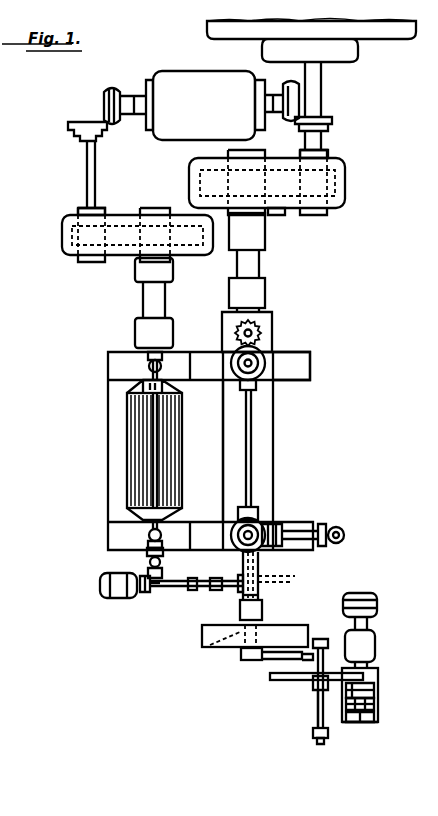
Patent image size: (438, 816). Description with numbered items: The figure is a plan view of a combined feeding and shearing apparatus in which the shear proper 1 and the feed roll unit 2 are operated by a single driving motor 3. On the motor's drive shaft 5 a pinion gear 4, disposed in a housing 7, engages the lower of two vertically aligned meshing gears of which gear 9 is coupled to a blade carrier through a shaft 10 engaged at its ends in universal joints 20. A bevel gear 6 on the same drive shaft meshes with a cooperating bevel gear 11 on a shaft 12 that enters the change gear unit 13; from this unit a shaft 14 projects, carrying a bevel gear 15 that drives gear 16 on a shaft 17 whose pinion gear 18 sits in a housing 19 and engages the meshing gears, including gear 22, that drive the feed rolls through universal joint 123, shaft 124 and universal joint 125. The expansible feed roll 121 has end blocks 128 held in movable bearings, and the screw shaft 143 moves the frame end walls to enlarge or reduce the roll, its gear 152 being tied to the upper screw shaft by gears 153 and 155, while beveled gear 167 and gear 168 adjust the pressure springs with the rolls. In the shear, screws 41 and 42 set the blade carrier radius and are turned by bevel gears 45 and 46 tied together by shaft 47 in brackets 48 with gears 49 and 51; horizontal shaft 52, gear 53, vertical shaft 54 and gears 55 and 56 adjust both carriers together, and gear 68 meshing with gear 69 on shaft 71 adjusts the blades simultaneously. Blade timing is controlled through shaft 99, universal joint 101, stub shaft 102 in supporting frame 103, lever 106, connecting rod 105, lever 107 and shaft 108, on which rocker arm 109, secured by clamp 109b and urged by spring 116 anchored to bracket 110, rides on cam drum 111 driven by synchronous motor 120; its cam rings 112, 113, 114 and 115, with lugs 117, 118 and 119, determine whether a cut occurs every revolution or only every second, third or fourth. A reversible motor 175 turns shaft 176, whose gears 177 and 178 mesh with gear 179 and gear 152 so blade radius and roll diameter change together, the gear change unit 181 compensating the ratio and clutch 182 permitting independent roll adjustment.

The shear proper 1 is at (217, 452).
The feed roll unit 2 is at (189, 423).
The driving motor 3 is at (388, 28).
The pinion gear 4 is at (330, 185).
The drive shaft 5 is at (322, 80).
The bevel gear 6 is at (330, 119).
The housing 7 is at (345, 200).
The meshing gear 9 is at (278, 212).
The shaft 10 is at (252, 262).
The bevel gear 11 is at (283, 88).
The shaft 12 is at (275, 114).
The change gear unit 13 is at (178, 141).
The shaft 14 is at (137, 114).
The bevel gear 15 is at (109, 88).
The gear 16 is at (76, 125).
The shaft 17 is at (89, 158).
The pinion gear 18 is at (72, 233).
The housing 19 is at (82, 218).
The universal joint 20 is at (266, 232).
The meshing gear 22 is at (116, 224).
The screw 41 is at (312, 368).
The screw 42 is at (265, 546).
The bevel gear 45 is at (312, 358).
The bevel gear 46 is at (238, 525).
The shaft 47 is at (252, 475).
The bracket 48 is at (260, 384).
The gear 49 is at (258, 380).
The gear 51 is at (258, 512).
The horizontal shaft 52 is at (300, 531).
The gear 53 is at (278, 524).
The vertical shaft 54 is at (344, 539).
The gear 55 is at (328, 526).
The gear 56 is at (343, 532).
The gear 68 is at (272, 340).
The gear 69 is at (260, 326).
The shaft 71 is at (252, 333).
The shaft 99 is at (258, 597).
The universal joint 101 is at (262, 610).
The stub shaft 102 is at (215, 650).
The supporting frame 103 is at (205, 638).
The connecting rod 105 is at (262, 658).
The lever 106 is at (240, 655).
The lever 107 is at (300, 646).
The shaft 108 is at (315, 665).
The rocker arm 109 is at (322, 645).
The clamp 109b is at (272, 679).
The bracket 110 is at (328, 738).
The cam drum 111 is at (375, 720).
The cam ring 112 is at (378, 672).
The cam ring 113 is at (376, 690).
The cam band 114 is at (378, 702).
The cam band 115 is at (378, 713).
The spring 116 is at (322, 745).
The lug 117 is at (345, 692).
The lug 118 is at (345, 705).
The lug 119 is at (312, 735).
The synchronous motor 120 is at (365, 593).
The expansible feed roll 121 is at (127, 410).
The universal joint 123 is at (135, 270).
The shaft 124 is at (143, 300).
The universal joint 125 is at (135, 333).
The end block 128 is at (143, 386).
The screw shaft 143 is at (165, 580).
The gear 152 is at (168, 584).
The gear 153 is at (150, 560).
The gear 155 is at (152, 572).
The beveled gear 167 is at (149, 368).
The gear 168 is at (148, 356).
The reversible motor 175 is at (100, 585).
The shaft 176 is at (165, 590).
The gear 177 is at (143, 592).
The gear 178 is at (258, 578).
The gear 179 is at (258, 583).
The gear change unit 181 is at (214, 592).
The clutch 182 is at (188, 592).